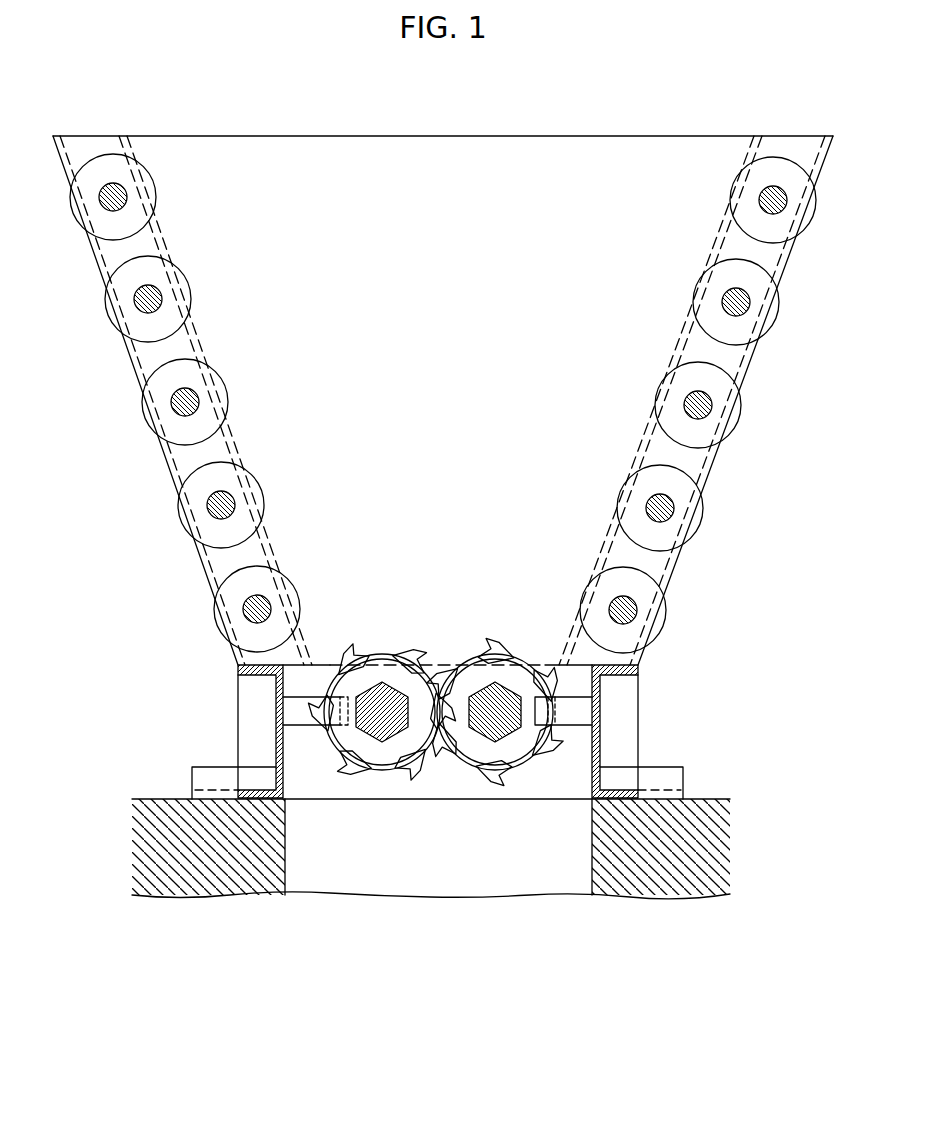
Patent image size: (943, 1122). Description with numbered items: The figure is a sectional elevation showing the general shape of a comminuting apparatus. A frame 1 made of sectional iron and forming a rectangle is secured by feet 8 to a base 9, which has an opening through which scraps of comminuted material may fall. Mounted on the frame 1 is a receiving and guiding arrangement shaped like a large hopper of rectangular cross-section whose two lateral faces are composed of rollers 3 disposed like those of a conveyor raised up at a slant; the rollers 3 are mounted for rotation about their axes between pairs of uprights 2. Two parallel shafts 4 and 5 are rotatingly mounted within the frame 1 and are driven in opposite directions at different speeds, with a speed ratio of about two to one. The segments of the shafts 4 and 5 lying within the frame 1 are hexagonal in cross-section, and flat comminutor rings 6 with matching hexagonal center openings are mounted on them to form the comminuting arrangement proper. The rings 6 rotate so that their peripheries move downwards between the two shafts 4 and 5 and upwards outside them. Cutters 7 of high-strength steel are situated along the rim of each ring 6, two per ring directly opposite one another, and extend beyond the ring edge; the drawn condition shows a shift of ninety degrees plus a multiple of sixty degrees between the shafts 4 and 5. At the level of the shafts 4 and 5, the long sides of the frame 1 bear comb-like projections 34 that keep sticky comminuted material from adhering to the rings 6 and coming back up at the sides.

The frame 1 is at (278, 720).
The uprights 2 is at (95, 140).
The rollers 3 is at (160, 277).
The shaft 4 is at (497, 725).
The shaft 5 is at (376, 725).
The comminutor rings 6 is at (400, 672).
The cutters 7 is at (405, 778).
The foot plate 8 is at (210, 780).
The base 9 is at (158, 822).
The comb-like projections 34 is at (297, 712).